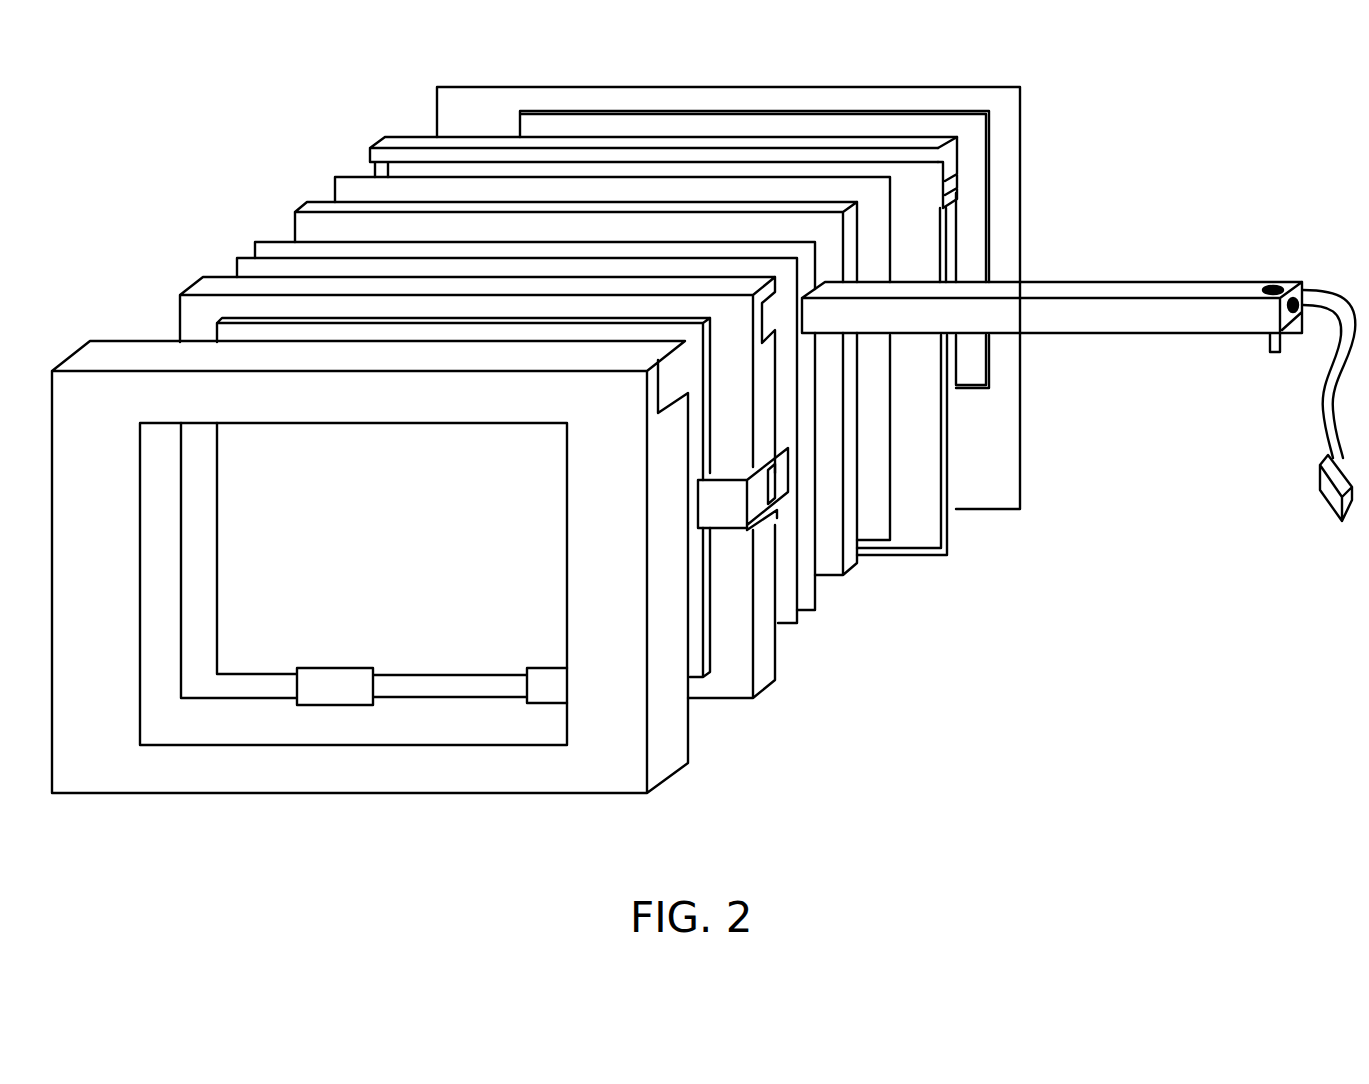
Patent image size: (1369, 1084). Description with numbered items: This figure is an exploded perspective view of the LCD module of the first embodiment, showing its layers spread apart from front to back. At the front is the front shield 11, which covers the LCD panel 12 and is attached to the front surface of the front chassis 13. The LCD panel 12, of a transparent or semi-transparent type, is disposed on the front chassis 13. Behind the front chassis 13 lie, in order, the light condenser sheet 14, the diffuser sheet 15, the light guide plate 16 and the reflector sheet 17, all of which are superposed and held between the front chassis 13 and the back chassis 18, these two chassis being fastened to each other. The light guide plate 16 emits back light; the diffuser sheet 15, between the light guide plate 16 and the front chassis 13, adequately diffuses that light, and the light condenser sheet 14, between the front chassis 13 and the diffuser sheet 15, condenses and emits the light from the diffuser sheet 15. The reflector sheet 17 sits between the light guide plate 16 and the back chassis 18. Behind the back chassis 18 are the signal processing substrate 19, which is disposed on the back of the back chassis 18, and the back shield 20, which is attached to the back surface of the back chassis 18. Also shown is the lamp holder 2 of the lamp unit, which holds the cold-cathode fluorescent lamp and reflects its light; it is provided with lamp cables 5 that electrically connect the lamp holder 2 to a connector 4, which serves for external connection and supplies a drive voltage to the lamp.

The lamp holder 2 is at (1128, 292).
The connector 4 is at (1322, 478).
The lamp cables 5 is at (1327, 388).
The front shield 11 is at (606, 775).
The LCD panel 12 is at (708, 680).
The front chassis 13 is at (765, 683).
The light condenser sheet 14 is at (790, 627).
The diffuser sheet 15 is at (813, 583).
The light guide plate 16 is at (855, 563).
The reflector sheet 17 is at (882, 520).
The back chassis 18 is at (952, 532).
The signal processing substrate 19 is at (975, 233).
The back shield 20 is at (1010, 120).